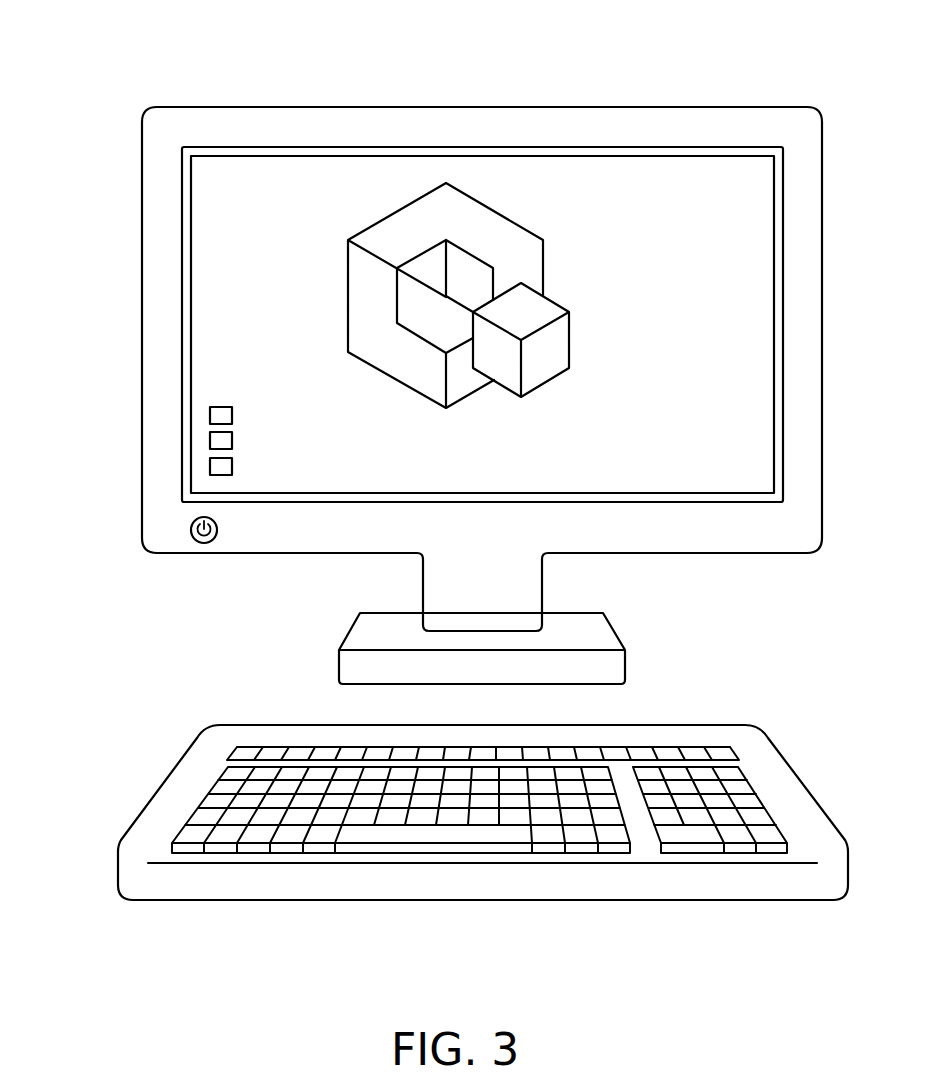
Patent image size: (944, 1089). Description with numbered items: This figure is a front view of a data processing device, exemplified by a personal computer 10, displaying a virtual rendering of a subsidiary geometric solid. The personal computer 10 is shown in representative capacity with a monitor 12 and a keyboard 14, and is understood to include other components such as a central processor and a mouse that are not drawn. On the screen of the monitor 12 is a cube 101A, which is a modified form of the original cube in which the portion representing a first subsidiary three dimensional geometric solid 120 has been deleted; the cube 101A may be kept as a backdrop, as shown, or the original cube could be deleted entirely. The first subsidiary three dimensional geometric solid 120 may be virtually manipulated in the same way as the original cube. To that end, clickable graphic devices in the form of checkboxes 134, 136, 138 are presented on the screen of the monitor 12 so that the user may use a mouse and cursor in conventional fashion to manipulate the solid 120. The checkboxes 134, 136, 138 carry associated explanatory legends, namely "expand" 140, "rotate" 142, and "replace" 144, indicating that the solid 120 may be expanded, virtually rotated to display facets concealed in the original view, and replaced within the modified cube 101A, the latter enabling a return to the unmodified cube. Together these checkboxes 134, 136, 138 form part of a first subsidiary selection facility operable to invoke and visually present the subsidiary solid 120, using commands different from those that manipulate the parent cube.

The personal computer 10 is at (472, 465).
The monitor 12 is at (193, 107).
The keyboard 14 is at (480, 808).
The cube 101A is at (411, 191).
The first subsidiary three dimensional geometric solid 120 is at (558, 302).
The checkbox 134 is at (210, 414).
The checkbox 136 is at (210, 446).
The checkbox 138 is at (210, 470).
The explanatory legend "expand" 140 is at (363, 413).
The explanatory legend "rotate" 142 is at (363, 445).
The explanatory legend "replace" 144 is at (363, 474).